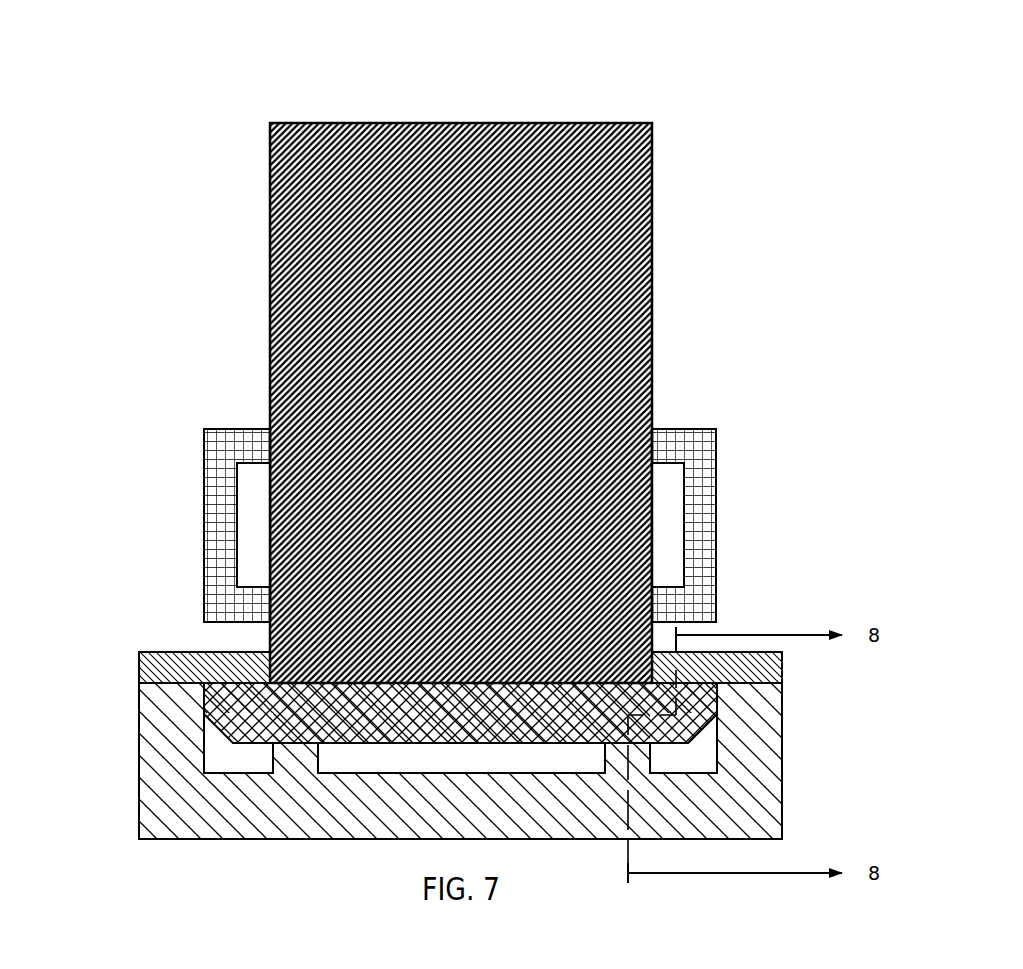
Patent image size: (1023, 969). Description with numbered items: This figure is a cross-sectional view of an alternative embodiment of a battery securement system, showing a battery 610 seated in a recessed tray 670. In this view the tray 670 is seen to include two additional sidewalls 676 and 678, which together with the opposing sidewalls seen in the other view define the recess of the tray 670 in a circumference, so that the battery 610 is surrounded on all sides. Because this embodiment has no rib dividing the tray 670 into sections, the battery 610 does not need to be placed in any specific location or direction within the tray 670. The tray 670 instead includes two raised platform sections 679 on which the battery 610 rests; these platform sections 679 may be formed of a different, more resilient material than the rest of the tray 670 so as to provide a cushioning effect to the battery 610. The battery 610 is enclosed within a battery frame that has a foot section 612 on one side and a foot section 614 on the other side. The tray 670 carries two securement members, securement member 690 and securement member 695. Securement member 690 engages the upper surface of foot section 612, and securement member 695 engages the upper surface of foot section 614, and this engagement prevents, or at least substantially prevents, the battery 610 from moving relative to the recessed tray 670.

The battery 610 is at (705, 110).
The foot section 612 is at (683, 720).
The foot section 614 is at (243, 712).
The tray 670 is at (583, 878).
The sidewall 676 is at (757, 745).
The sidewall 678 is at (158, 739).
The raised platform section 679 is at (645, 760).
The securement member 690 is at (740, 665).
The securement member 695 is at (188, 668).